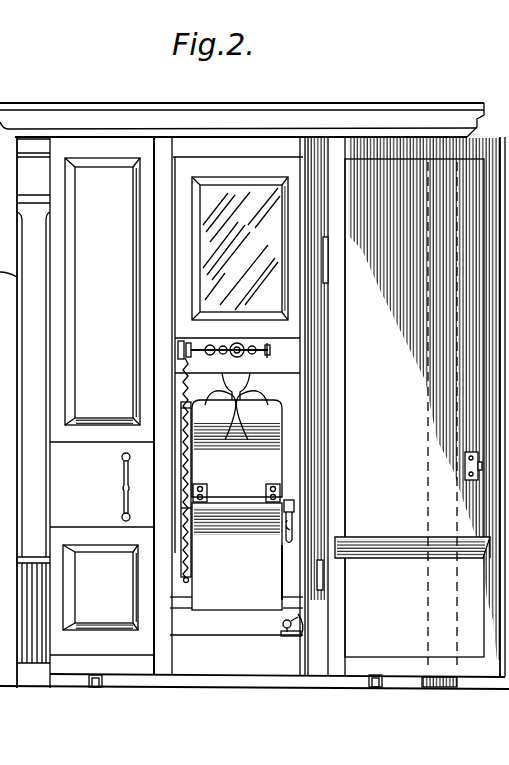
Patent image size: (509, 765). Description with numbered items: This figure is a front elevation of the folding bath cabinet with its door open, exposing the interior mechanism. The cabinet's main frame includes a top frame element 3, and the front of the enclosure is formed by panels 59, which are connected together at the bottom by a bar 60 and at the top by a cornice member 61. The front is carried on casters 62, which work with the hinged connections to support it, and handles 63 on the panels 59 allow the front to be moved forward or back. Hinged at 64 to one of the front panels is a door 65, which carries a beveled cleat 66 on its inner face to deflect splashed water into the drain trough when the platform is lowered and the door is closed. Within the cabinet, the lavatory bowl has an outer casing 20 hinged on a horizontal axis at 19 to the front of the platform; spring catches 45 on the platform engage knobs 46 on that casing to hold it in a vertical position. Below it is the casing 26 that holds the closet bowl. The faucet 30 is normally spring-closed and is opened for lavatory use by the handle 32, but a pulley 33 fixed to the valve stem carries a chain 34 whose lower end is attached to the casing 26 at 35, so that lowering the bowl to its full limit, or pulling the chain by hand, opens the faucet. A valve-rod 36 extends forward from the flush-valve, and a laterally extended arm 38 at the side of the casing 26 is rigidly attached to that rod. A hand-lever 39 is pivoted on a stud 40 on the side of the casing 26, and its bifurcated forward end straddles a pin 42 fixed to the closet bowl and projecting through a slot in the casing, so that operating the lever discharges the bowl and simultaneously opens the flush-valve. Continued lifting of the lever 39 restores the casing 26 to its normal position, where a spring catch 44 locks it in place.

The top frame element 3 is at (161, 104).
The cornice member 61 is at (257, 118).
The hinge 64 is at (325, 258).
The door 65 is at (421, 258).
The beveled cleat 66 is at (441, 560).
The pulley 33 is at (200, 342).
The faucet 30 is at (237, 332).
The handle 32 is at (270, 355).
The hinge of lavatory bowl 19 is at (273, 373).
The spring catches 45 is at (236, 406).
The knobs 46 is at (237, 442).
The outer casing 20 is at (237, 448).
The spring catch 44 is at (278, 500).
The chain attachment point 35 is at (237, 556).
The pin 42 is at (237, 523).
The casing 26 is at (237, 573).
The stud 40 is at (277, 558).
The hand-lever 39 is at (300, 530).
The chain 34 is at (185, 428).
The valve-rod 36 is at (283, 623).
The laterally extended arm 38 is at (296, 640).
The panels 59 is at (102, 394).
The handles 63 is at (121, 497).
The bar 60 is at (243, 690).
The casters 62 is at (97, 690).